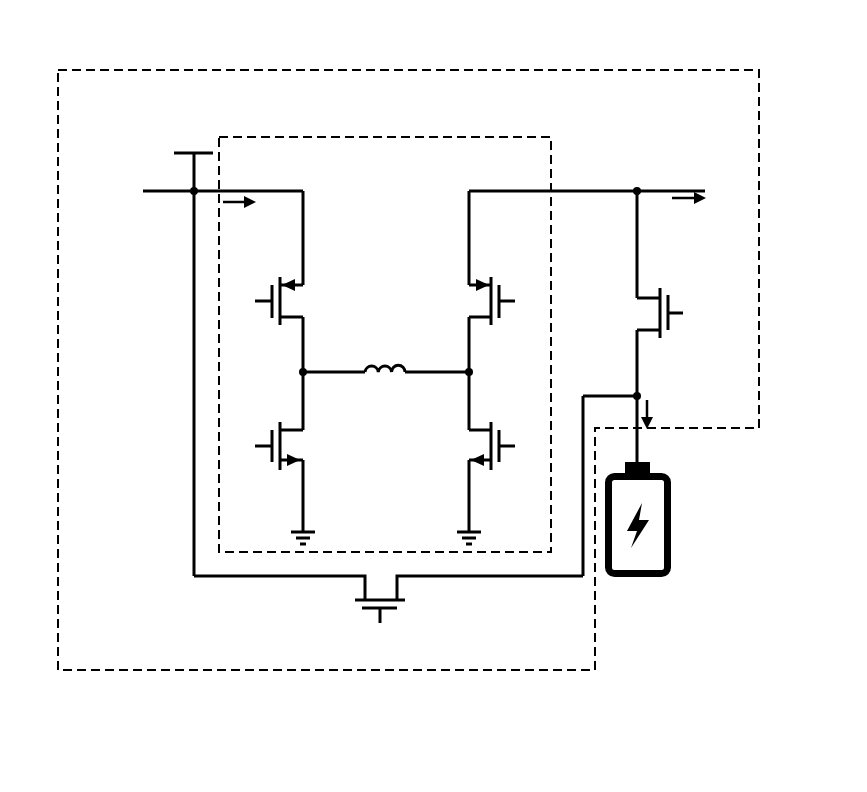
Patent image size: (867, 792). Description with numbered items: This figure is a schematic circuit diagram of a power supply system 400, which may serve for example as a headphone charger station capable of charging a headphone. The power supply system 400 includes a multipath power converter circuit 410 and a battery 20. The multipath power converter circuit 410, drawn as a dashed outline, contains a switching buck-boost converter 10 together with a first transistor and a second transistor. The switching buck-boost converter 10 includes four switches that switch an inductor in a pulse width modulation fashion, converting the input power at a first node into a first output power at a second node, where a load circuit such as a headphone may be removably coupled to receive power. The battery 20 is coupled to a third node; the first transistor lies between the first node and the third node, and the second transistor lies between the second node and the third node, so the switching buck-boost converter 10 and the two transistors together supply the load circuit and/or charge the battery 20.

The power supply system 400 is at (150, 47).
The multipath power converter circuit 410 is at (537, 70).
The switching buck-boost converter 10 is at (388, 137).
The battery 20 is at (671, 508).